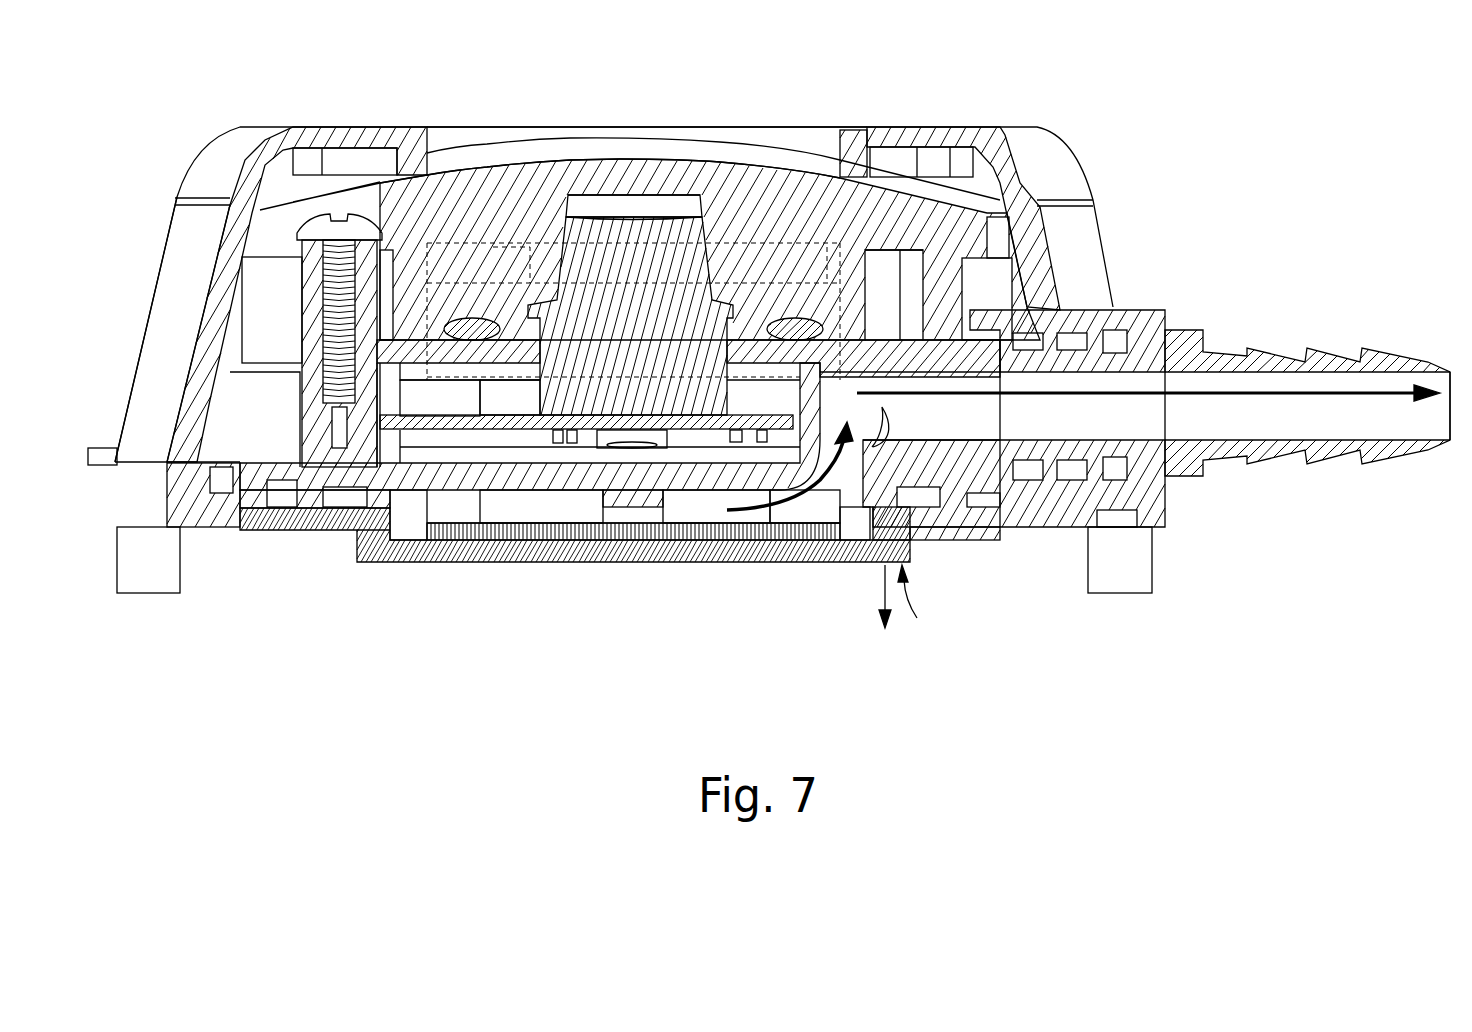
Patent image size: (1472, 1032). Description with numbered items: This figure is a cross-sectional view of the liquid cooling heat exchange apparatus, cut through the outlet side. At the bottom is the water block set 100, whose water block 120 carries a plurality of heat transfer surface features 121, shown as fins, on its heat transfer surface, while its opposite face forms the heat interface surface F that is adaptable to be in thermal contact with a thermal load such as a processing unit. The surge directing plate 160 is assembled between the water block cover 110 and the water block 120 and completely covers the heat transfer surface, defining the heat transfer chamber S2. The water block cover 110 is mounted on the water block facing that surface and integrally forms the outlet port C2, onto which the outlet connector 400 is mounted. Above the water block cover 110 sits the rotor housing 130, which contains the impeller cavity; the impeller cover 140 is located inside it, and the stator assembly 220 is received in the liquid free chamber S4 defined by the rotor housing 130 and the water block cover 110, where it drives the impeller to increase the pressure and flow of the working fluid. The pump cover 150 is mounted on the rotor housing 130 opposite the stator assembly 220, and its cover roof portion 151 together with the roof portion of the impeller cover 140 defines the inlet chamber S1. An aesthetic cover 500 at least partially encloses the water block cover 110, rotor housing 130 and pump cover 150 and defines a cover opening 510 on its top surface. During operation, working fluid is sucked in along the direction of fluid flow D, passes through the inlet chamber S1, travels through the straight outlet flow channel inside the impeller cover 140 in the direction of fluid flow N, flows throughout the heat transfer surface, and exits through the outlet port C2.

The water block set 100 is at (430, 590).
The water block cover 110 is at (1060, 507).
The water block 120 is at (758, 548).
The heat transfer surface features 121 is at (677, 532).
The rotor housing 130 is at (387, 350).
The impeller cover 140 is at (645, 255).
The pump cover 150 is at (507, 193).
The cover roof portion 151 is at (543, 160).
The surge directing plate 160 is at (503, 505).
The stator assembly 220 is at (580, 432).
The outlet connector 400 is at (1295, 368).
The aesthetic cover 500 is at (922, 147).
The cover opening 510 is at (830, 135).
The inlet chamber S1 is at (627, 207).
The heat transfer chamber S2 is at (412, 534).
The liquid free chamber S4 is at (510, 396).
The outlet port C2 is at (923, 418).
The direction of fluid flow D is at (1227, 393).
The direction of fluid flow N is at (885, 610).
The heat interface surface F is at (911, 606).